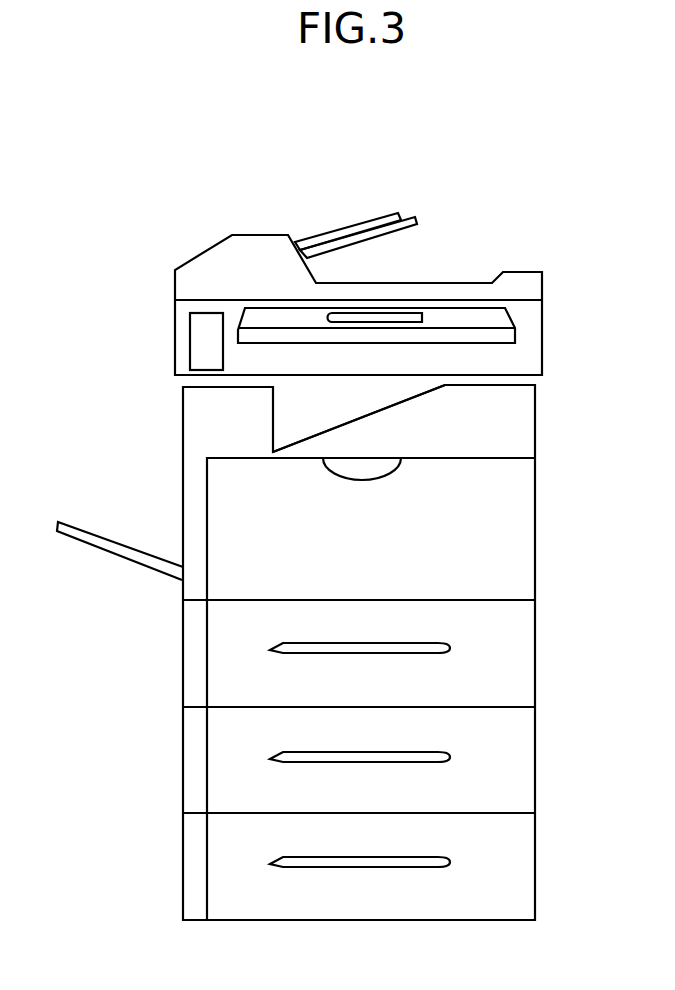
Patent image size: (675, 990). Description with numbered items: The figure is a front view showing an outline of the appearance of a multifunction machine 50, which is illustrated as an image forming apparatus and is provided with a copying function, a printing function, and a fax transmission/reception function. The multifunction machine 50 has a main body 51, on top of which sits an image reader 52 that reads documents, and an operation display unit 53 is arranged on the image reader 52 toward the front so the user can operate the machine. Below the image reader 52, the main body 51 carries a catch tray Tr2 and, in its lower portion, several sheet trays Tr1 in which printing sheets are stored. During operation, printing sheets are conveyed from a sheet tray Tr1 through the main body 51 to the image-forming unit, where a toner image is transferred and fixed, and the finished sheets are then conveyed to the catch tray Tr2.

The multifunction machine 50 is at (511, 155).
The main body 51 is at (536, 513).
The image reader 52 is at (260, 235).
The operation display unit 53 is at (398, 315).
The sheet tray Tr1 is at (518, 657).
The catch tray Tr2 is at (320, 433).